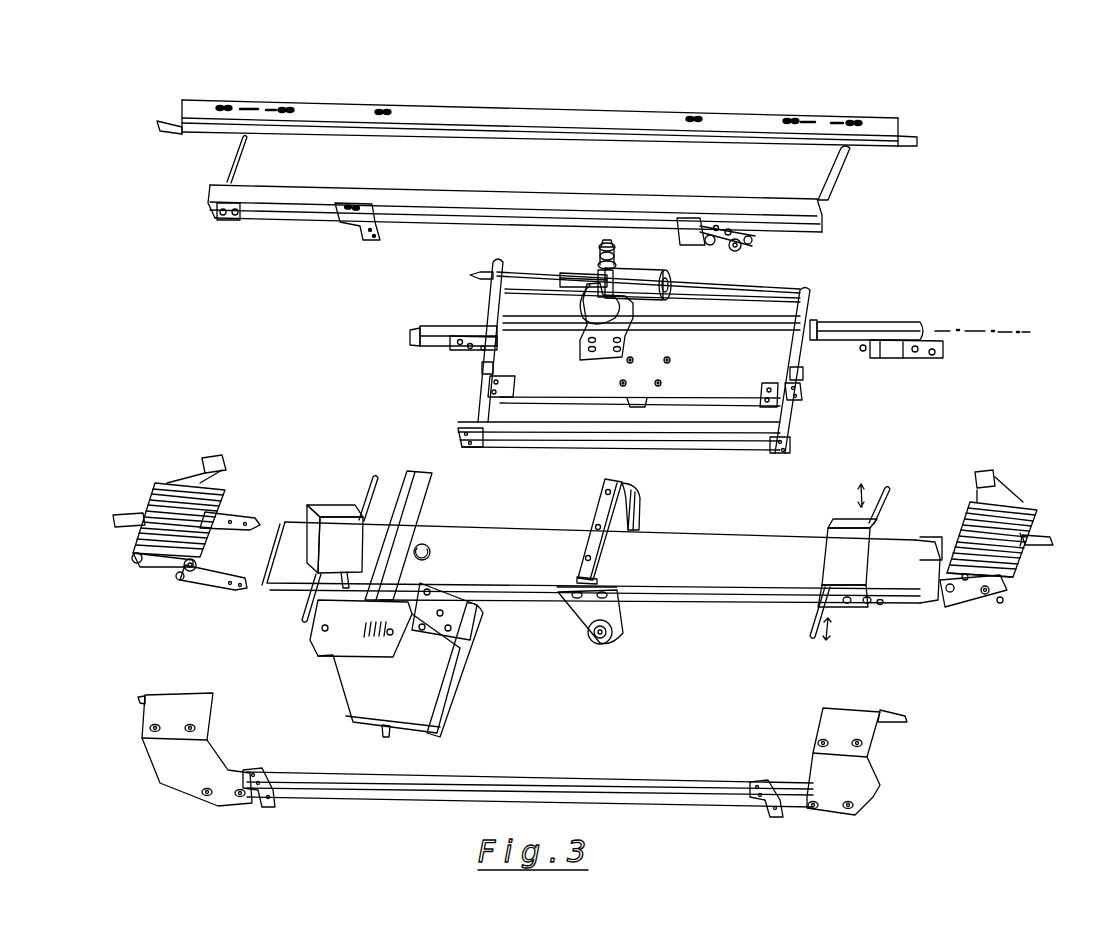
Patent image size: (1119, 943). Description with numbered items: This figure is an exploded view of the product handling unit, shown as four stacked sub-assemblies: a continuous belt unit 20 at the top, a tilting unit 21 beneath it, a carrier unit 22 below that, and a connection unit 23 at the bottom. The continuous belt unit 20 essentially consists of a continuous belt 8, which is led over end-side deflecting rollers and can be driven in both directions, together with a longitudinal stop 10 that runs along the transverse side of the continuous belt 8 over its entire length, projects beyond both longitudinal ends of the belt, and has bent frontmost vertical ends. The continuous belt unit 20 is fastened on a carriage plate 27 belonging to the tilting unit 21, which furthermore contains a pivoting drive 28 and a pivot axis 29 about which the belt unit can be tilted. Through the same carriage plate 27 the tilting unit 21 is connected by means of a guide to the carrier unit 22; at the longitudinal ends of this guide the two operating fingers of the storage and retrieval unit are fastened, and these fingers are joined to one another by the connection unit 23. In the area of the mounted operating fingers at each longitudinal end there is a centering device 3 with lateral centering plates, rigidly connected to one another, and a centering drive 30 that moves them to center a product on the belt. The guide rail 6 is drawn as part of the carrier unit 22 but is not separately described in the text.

The centering device 3 is at (900, 480).
The guide rail 6 is at (329, 476).
The continuous belt 8 is at (553, 163).
The longitudinal stop 10 is at (200, 107).
The continuous belt unit 20 is at (622, 140).
The tilting unit 21 is at (1022, 388).
The carrier unit 22 is at (1058, 600).
The connection unit 23 is at (1053, 742).
The carriage plate 27 is at (777, 369).
The pivoting drive 28 is at (683, 270).
The pivot axis 29 is at (1030, 336).
The centering drive 30 is at (347, 687).